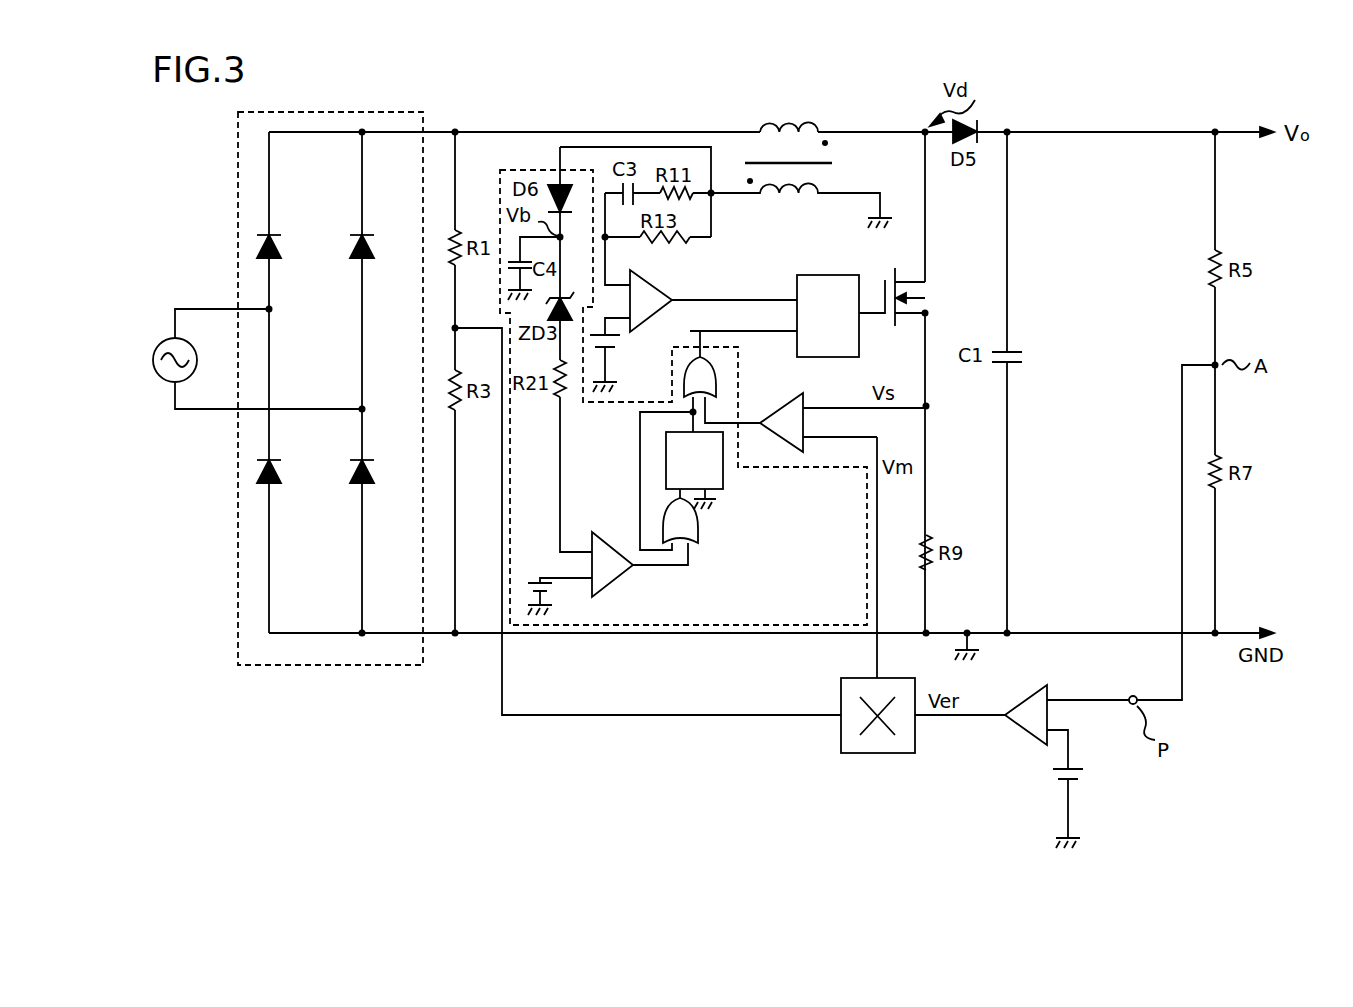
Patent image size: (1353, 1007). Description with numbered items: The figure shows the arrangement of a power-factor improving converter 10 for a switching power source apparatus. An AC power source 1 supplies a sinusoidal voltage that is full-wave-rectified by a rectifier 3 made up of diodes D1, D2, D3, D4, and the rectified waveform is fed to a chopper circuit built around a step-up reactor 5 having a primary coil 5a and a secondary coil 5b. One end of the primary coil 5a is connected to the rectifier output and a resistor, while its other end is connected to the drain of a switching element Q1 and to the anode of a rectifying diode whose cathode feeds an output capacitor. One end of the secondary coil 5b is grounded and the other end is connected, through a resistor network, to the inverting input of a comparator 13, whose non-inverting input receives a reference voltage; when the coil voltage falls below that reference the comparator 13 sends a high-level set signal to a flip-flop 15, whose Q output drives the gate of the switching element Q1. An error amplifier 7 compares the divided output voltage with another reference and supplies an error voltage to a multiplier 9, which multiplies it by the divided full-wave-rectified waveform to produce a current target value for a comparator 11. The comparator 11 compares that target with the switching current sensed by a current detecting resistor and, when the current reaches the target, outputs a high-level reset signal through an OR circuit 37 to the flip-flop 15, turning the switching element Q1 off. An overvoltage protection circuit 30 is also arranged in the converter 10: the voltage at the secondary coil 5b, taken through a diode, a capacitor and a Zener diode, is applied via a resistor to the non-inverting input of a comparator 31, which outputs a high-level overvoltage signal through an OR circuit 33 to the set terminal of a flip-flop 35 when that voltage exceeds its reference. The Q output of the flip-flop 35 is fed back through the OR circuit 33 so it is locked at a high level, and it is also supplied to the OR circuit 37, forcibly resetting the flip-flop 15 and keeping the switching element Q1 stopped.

The AC power source 1 is at (168, 342).
The rectifier 3 is at (330, 360).
The step-up reactor 5 is at (801, 153).
The primary coil 5a is at (790, 118).
The secondary coil 5b is at (768, 206).
The error amplifier 7 is at (1012, 735).
The multiplier 9 is at (878, 753).
The power-factor improving converter 10 is at (1336, 88).
The comparator 11 is at (805, 395).
The comparator 13 is at (640, 270).
The flip-flop 15 is at (812, 276).
The overvoltage protection circuit 30 is at (867, 520).
The comparator 31 is at (632, 574).
The OR circuit 33 is at (698, 522).
The flip-flop 35 is at (723, 470).
The OR circuit 37 is at (716, 378).
The diode D1 is at (284, 246).
The diode D2 is at (284, 471).
The diode D3 is at (377, 246).
The diode D4 is at (377, 471).
The switching element Q1 is at (909, 297).